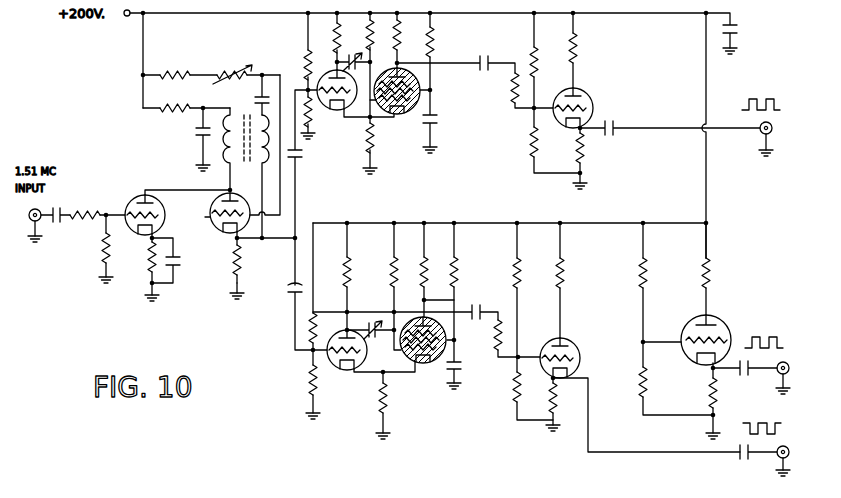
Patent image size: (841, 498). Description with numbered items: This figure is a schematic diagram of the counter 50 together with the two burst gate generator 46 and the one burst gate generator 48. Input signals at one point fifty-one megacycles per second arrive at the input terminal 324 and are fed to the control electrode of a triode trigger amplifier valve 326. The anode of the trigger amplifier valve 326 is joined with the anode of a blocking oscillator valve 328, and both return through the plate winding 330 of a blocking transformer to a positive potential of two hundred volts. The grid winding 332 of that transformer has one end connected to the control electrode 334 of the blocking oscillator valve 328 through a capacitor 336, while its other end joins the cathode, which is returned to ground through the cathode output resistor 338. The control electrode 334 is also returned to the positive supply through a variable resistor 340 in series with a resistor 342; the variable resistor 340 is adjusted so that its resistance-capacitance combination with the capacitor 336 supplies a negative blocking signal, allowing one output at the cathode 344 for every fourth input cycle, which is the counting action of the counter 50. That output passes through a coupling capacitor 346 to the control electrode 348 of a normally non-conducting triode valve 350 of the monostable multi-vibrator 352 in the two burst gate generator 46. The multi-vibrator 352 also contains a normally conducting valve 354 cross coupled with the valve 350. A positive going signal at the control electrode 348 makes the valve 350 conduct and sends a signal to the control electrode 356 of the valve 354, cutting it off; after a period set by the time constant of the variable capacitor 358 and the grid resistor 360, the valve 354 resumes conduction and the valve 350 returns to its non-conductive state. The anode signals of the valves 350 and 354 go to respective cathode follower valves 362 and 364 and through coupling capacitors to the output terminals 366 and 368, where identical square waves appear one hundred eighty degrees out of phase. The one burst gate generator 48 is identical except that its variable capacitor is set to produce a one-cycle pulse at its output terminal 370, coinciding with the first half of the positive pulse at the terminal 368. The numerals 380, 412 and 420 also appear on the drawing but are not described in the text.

The one burst gate generator 48 is at (415, 8).
The two burst gate generator 46 is at (483, 216).
The counter 50 is at (123, 144).
The input terminal 324 is at (32, 226).
The triode trigger amplifier valve 326 is at (134, 200).
The blocking oscillator valve 328 is at (223, 236).
The plate winding 330 is at (233, 112).
The grid winding 332 is at (242, 189).
The control electrode 334 is at (210, 216).
The capacitor 336 is at (265, 95).
The cathode output resistor 338 is at (242, 256).
The variable resistor 340 is at (226, 73).
The resistor 342 is at (166, 73).
The cathode 344 is at (233, 262).
The coupling capacitor 346 is at (291, 297).
The control electrode 348 is at (337, 369).
The normally non-conducting triode valve 350 is at (335, 332).
The monostable multi-vibrator 352 is at (385, 272).
The normally conducting valve 354 is at (412, 374).
The control electrode 356 is at (405, 360).
The variable capacitor 358 is at (370, 322).
The grid resistor 360 is at (393, 257).
The cathode follower valve 362 is at (557, 339).
The cathode follower valve 364 is at (720, 318).
The output terminal 366 is at (779, 462).
The output terminal 368 is at (778, 375).
The output terminal 370 is at (772, 130).
The circuit lead 380 is at (355, 497).
The circuit lead 412 is at (605, 492).
The circuit lead 420 is at (517, 492).